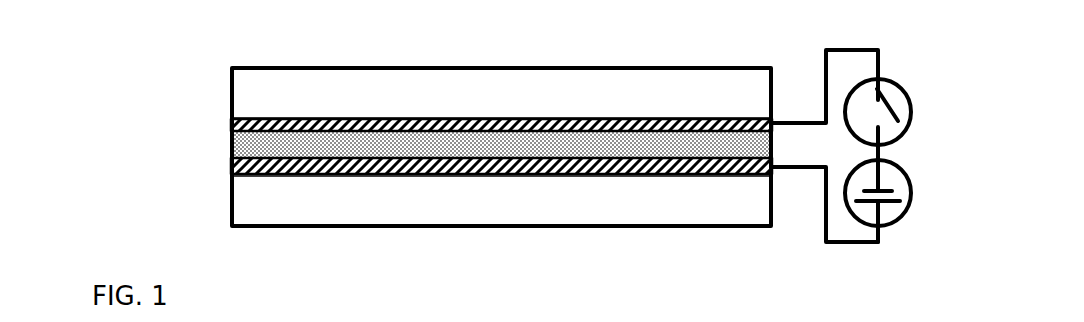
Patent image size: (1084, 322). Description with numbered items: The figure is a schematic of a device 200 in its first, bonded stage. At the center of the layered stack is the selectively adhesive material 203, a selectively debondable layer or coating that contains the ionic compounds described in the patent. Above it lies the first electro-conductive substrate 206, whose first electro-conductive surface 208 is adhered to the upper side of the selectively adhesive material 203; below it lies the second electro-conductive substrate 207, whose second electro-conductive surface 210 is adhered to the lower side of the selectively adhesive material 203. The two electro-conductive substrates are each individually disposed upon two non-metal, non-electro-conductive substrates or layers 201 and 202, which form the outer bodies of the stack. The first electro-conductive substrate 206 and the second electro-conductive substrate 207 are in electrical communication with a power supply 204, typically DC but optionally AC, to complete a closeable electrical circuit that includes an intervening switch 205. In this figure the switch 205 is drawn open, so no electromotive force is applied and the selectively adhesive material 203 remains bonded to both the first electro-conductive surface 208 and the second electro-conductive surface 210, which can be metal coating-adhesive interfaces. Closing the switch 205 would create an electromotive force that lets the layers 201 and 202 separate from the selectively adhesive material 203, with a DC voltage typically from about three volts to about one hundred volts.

The device 200 is at (200, 155).
The non-metal substrate 201 is at (273, 195).
The non-metal substrate 202 is at (360, 110).
The selectively adhesive material 203 is at (557, 142).
The power supply 204 is at (904, 212).
The switch 205 is at (907, 83).
The first electro-conductive substrate 206 is at (605, 120).
The second electro-conductive substrate 207 is at (683, 175).
The first electro-conductive surface 208 is at (252, 137).
The second electro-conductive surface 210 is at (753, 147).